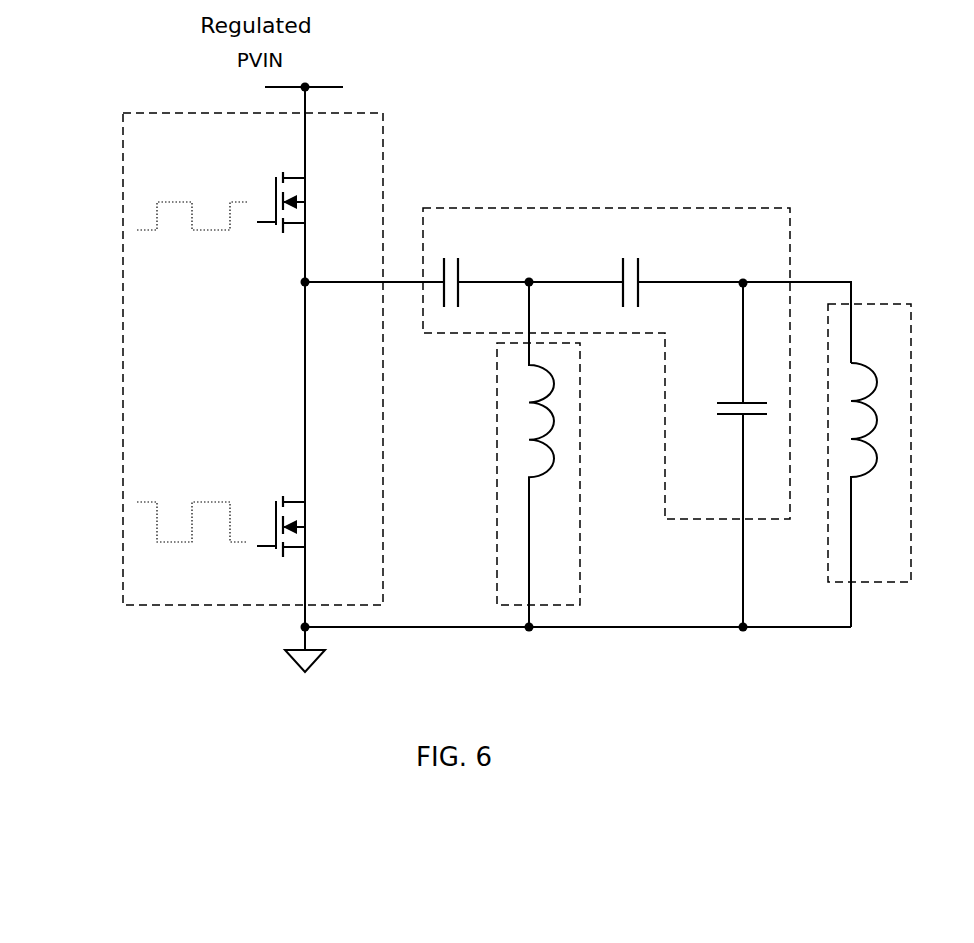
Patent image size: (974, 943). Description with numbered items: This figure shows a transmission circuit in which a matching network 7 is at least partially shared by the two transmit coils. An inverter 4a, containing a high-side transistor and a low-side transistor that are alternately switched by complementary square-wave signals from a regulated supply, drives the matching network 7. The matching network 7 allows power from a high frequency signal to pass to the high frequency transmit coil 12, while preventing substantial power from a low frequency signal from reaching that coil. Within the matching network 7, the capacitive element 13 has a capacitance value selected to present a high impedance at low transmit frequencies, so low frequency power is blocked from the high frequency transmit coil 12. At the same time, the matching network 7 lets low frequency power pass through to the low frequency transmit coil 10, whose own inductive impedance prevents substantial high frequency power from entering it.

The inverter 4a is at (126, 110).
The matching network 7 is at (648, 207).
The low frequency transmit coil 10 is at (497, 465).
The high frequency transmit coil 12 is at (912, 352).
The capacitive element 13 is at (638, 278).